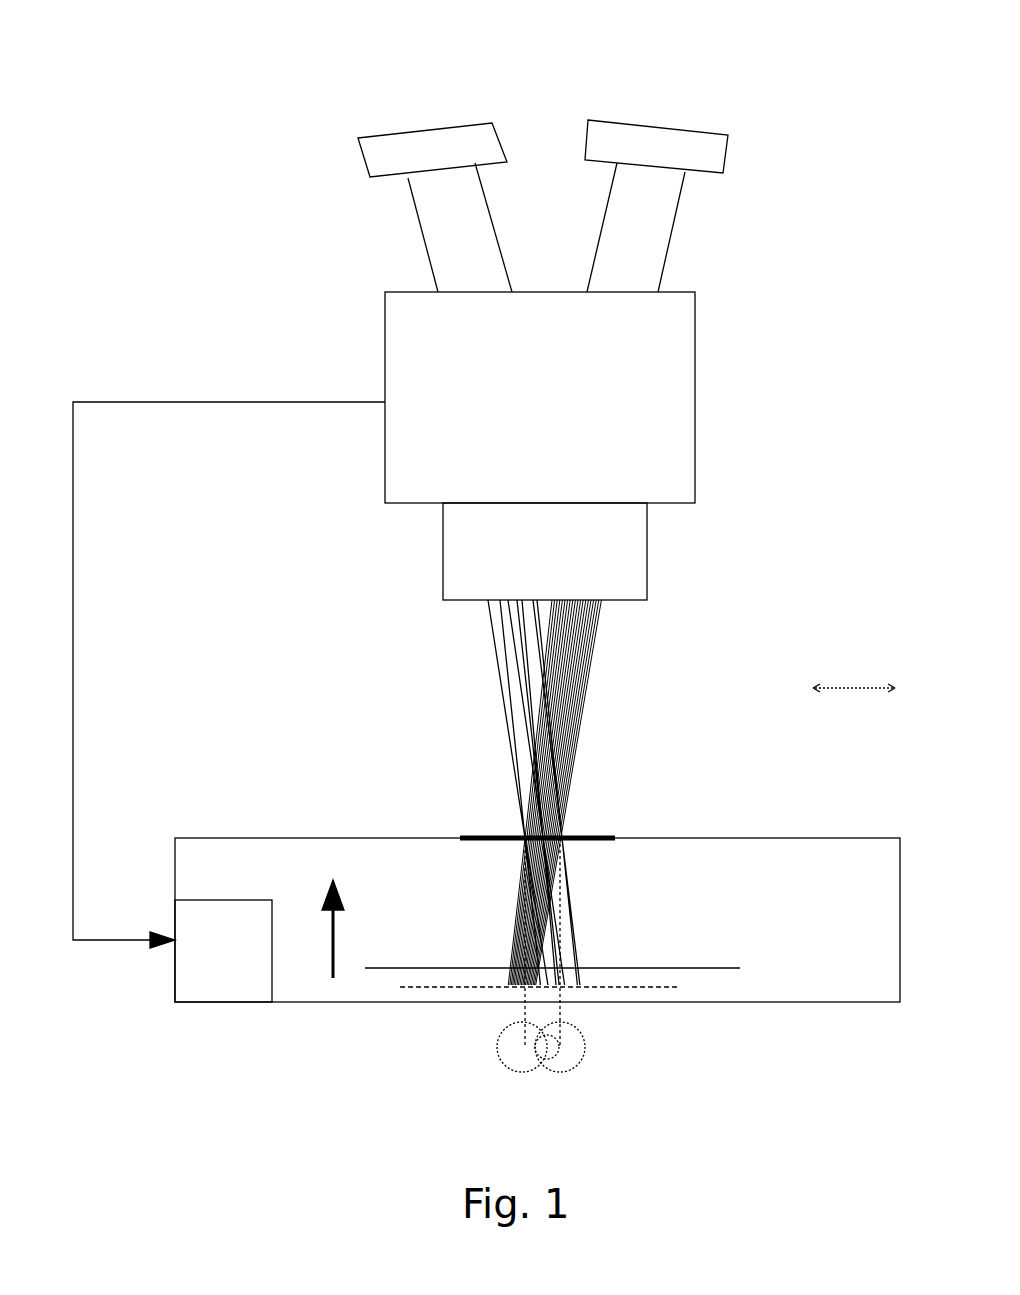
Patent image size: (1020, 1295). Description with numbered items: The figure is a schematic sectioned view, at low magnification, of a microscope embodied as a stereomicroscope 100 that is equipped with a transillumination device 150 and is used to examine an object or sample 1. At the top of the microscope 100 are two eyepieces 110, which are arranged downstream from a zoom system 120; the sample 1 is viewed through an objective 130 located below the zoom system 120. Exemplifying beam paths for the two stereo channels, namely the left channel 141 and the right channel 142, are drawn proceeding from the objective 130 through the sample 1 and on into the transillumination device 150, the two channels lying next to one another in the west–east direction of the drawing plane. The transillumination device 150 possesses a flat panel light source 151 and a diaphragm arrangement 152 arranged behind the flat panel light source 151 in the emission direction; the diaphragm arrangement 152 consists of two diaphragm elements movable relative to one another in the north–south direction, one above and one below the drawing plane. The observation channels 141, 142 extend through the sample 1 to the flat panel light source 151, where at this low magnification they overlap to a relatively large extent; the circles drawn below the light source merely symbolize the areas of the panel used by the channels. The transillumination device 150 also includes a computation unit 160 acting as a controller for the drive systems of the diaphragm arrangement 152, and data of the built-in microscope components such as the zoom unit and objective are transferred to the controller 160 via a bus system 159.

The stereomicroscope 100 is at (310, 55).
The eyepieces 110 is at (617, 218).
The zoom system 120 is at (697, 463).
The objective 130 is at (649, 578).
The left observation channel 141 is at (552, 596).
The right observation channel 142 is at (612, 586).
The sample 1 is at (617, 838).
The transillumination device 150 is at (220, 847).
The flat panel light source 151 is at (470, 990).
The diaphragm arrangement 152 is at (705, 968).
The bus system 159 is at (188, 403).
The computation unit 160 is at (243, 966).